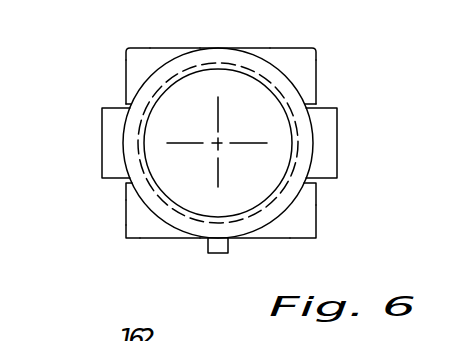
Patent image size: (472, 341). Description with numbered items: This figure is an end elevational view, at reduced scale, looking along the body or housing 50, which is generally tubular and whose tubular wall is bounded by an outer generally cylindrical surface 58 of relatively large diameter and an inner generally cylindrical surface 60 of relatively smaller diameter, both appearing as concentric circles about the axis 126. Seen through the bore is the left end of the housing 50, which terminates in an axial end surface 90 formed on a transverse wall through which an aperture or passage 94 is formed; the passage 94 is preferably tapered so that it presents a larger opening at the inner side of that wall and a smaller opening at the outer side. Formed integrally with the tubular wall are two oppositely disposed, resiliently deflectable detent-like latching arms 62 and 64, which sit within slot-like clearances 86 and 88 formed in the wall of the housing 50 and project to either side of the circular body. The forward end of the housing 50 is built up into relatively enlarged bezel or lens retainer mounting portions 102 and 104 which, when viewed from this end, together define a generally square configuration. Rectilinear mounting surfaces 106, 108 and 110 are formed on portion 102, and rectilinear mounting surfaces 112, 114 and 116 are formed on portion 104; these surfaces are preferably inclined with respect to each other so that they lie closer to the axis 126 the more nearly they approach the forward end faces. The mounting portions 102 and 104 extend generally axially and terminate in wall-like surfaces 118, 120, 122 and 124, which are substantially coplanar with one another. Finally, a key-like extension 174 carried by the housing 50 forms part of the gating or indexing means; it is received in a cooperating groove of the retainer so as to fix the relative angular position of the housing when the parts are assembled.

The housing 50 is at (163, 66).
The aperture 94 is at (203, 78).
The axial end surface 90 is at (258, 67).
The axis 126 is at (218, 145).
The bezel mounting portion 102 is at (127, 44).
The wall-like surface 118 is at (138, 62).
The mounting surface 108 is at (246, 47).
The wall-like surface 120 is at (299, 58).
The mounting surface 106 is at (318, 72).
The slot-like clearance 86 is at (313, 105).
The mounting surface 110 is at (125, 82).
The slot-like clearance 88 is at (133, 107).
The latching arm 64 is at (98, 142).
The latching arm 62 is at (336, 133).
The mounting surface 116 is at (125, 193).
The wall-like surface 124 is at (135, 213).
The bezel mounting portion 104 is at (120, 241).
The mounting surface 114 is at (152, 239).
The inner cylindrical surface 60 is at (188, 207).
The key-like extension 174 is at (228, 249).
The outer cylindrical surface 58 is at (284, 212).
The wall-like surface 122 is at (308, 213).
The mounting surface 112 is at (319, 190).